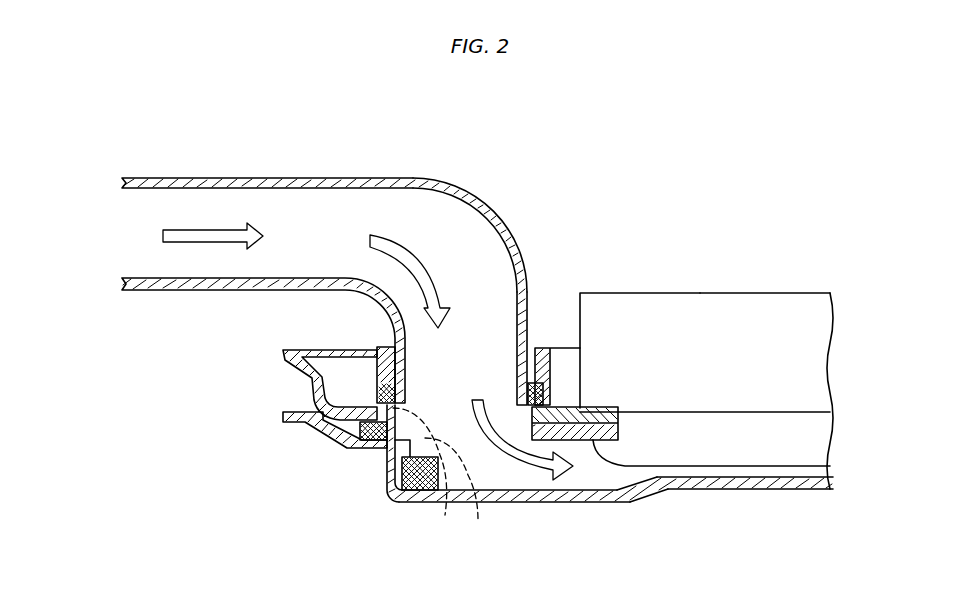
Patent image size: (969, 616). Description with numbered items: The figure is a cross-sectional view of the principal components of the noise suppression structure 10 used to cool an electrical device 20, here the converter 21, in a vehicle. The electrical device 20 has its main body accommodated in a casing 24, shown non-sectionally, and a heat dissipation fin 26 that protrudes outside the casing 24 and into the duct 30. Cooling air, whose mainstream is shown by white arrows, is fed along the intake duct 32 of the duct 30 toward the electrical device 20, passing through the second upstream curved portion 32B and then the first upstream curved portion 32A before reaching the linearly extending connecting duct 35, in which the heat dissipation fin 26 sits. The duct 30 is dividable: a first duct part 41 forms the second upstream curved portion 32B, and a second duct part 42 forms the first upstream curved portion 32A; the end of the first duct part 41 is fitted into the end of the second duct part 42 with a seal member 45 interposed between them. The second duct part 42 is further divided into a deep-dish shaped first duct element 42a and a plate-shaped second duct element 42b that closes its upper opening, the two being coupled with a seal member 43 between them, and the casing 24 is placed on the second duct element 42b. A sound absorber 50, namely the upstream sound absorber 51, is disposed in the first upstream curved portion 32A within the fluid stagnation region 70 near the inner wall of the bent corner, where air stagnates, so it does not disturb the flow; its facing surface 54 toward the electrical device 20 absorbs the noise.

The noise suppression structure 10 is at (632, 156).
The electrical device 20 is at (762, 292).
The converter 21 is at (803, 356).
The casing 24 is at (680, 292).
The heat dissipation fin 26 is at (772, 441).
The duct 30 is at (232, 178).
The intake duct 32 is at (320, 177).
The first upstream curved portion 32A is at (400, 504).
The second upstream curved portion 32B is at (486, 214).
The connecting duct 35 is at (673, 490).
The first duct part 41 is at (400, 178).
The second duct part 42 is at (590, 504).
The first duct element 42a is at (637, 504).
The second duct element 42b is at (565, 406).
The seal member 43 is at (621, 443).
The seal member 45 is at (376, 350).
The sound absorber 50 is at (385, 445).
The upstream sound absorber 51 is at (327, 465).
The facing surface 54 is at (445, 503).
The fluid stagnation region 70 is at (478, 520).